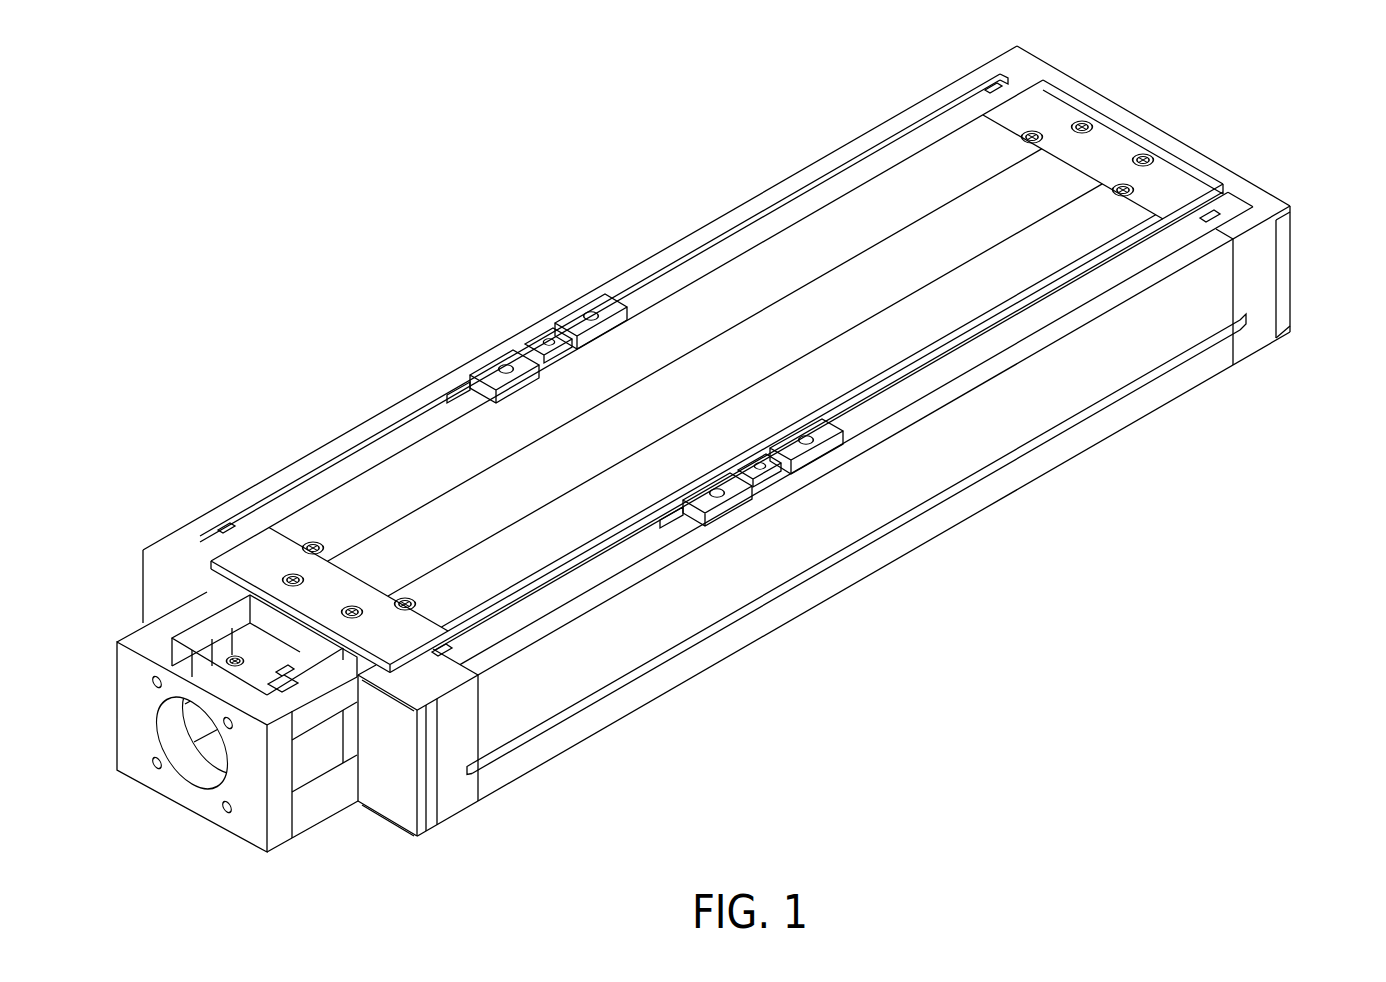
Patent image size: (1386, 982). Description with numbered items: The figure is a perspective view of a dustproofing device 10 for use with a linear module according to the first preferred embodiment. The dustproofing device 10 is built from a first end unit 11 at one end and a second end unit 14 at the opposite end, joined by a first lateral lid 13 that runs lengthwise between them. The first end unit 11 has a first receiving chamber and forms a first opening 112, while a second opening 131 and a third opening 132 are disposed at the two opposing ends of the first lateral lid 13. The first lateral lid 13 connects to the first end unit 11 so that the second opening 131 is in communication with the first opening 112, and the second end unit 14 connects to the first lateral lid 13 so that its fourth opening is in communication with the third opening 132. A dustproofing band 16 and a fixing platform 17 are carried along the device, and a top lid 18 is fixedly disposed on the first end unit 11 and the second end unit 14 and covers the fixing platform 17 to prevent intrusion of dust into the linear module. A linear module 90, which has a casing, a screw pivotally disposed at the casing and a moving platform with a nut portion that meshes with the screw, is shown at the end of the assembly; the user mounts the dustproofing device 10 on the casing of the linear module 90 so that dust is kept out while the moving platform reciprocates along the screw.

The dustproofing device 10 is at (1241, 135).
The first end unit 11 is at (1262, 270).
The first lateral lid 13 is at (742, 566).
The second end unit 14 is at (410, 690).
The dustproofing band 16 is at (960, 366).
The fixing platform 17 is at (820, 432).
The top lid 18 is at (711, 305).
The linear module 90 is at (181, 832).
The second opening 131 is at (1235, 284).
The first opening 112 is at (1224, 234).
The third opening 132 is at (486, 716).